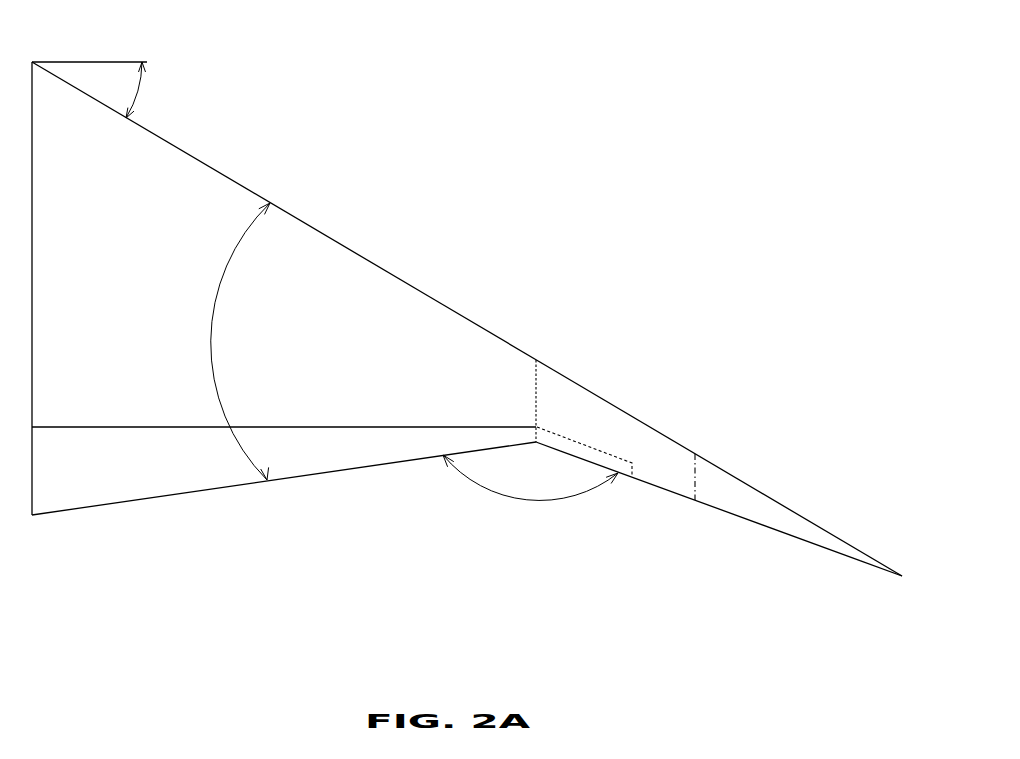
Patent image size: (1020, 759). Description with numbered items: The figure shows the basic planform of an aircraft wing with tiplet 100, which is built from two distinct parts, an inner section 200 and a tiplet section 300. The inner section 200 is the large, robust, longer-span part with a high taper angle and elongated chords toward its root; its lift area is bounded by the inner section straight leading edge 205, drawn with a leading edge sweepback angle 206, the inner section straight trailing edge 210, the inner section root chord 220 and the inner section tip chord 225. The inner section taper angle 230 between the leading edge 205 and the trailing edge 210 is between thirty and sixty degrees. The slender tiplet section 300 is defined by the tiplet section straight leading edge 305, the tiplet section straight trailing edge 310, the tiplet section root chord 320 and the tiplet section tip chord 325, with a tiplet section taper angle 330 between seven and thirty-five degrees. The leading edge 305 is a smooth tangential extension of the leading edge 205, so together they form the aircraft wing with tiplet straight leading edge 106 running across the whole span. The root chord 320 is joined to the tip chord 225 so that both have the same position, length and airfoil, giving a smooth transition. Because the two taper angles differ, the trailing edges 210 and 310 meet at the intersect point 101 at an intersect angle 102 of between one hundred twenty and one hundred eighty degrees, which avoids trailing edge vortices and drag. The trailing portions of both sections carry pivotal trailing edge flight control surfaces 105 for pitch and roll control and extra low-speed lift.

The aircraft wing with tiplet 100 is at (545, 380).
The intersect point 101 is at (533, 443).
The intersect angle 102 is at (517, 498).
The pivotal trailing edge flight control surfaces 105 is at (360, 450).
The aircraft wing with tiplet straight leading edge 106 is at (553, 363).
The inner section 200 is at (133, 155).
The inner section straight leading edge 205 is at (192, 153).
The leading edge sweepback angle 206 is at (145, 80).
The inner section straight trailing edge 210 is at (297, 478).
The inner section root chord 220 is at (34, 265).
The inner section tip chord 225 is at (533, 430).
The inner section taper angle 230 is at (215, 300).
The tiplet section 300 is at (620, 438).
The tiplet section straight leading edge 305 is at (590, 391).
The tiplet section straight trailing edge 310 is at (660, 490).
The tiplet section root chord 320 is at (538, 407).
The tiplet section tip chord 325 is at (903, 573).
The tiplet section taper angle 330 is at (740, 497).